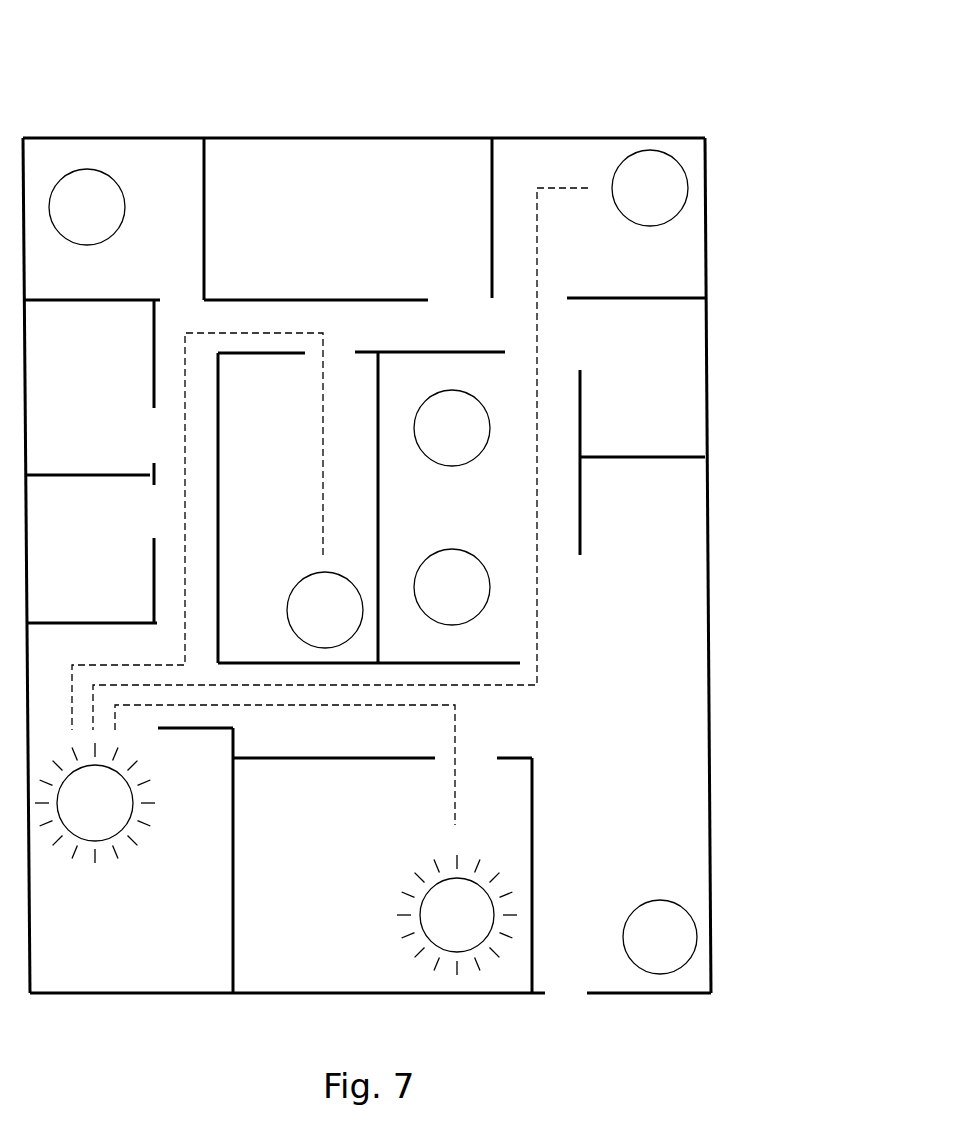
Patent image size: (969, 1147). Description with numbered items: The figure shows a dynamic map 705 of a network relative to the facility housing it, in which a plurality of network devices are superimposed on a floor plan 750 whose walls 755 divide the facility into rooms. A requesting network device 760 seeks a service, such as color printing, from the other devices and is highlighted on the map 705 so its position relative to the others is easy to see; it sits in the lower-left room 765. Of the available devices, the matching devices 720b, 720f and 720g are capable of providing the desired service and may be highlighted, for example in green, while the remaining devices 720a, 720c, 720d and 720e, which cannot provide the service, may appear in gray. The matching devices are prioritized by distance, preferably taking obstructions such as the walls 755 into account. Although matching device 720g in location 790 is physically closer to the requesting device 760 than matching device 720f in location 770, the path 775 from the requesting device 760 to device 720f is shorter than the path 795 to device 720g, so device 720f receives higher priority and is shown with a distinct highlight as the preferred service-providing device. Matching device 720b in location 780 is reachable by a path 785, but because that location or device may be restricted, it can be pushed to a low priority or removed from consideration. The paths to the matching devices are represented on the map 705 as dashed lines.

The map 705 is at (150, 72).
The floor plan 750 is at (395, 138).
The walls 755 is at (205, 255).
The requesting network device 760 is at (95, 803).
The room 765 is at (130, 860).
The location 770 is at (382, 875).
The path 775 is at (455, 722).
The location 780 is at (599, 218).
The path 785 is at (538, 607).
The location 790 is at (298, 508).
The path 795 is at (325, 340).
The network device 720a is at (87, 207).
The matching network device 720b is at (650, 188).
The network device 720c is at (452, 428).
The network device 720d is at (452, 587).
The network device 720e is at (660, 937).
The preferred service-providing network device 720f is at (457, 915).
The matching network device 720g is at (325, 610).